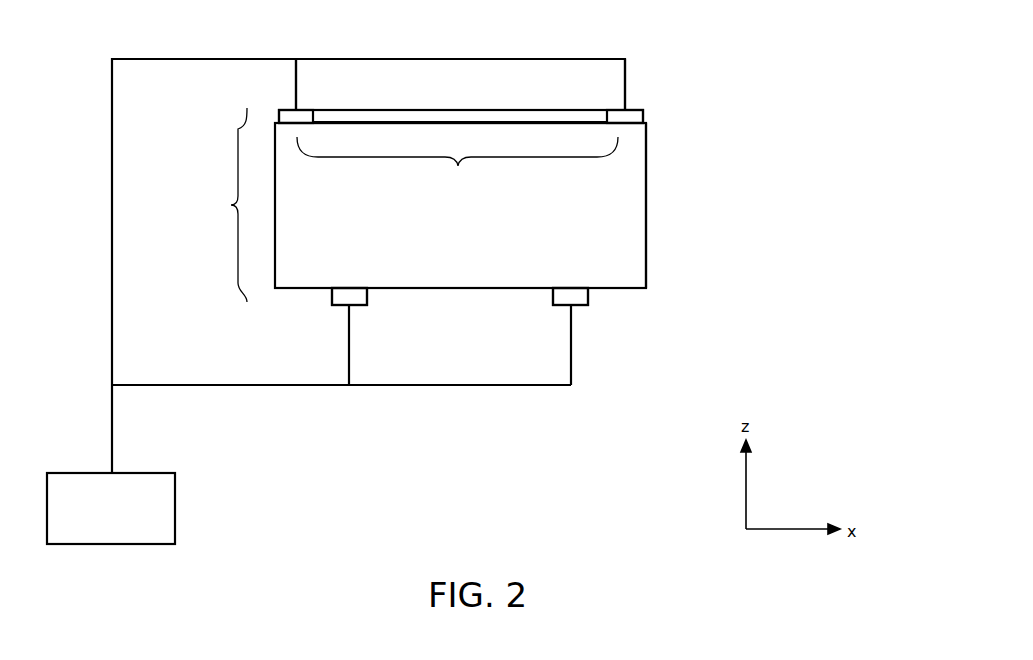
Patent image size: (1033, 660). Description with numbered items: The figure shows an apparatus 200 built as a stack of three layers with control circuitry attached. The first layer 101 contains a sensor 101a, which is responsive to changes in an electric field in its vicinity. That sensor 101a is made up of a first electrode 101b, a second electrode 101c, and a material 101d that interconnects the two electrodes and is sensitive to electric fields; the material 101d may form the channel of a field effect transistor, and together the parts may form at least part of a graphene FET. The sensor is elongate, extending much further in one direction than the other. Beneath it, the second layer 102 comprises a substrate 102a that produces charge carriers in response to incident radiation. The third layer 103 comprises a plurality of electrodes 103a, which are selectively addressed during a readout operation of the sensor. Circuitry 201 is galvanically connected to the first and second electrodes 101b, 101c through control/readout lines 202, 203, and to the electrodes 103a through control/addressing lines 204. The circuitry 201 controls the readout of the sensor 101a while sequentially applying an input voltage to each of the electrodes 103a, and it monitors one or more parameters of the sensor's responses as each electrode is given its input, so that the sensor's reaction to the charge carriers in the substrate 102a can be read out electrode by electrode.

The apparatus 200 is at (822, 49).
The circuitry 201 is at (163, 500).
The control/readout line 202 is at (296, 88).
The control/readout line 203 is at (625, 82).
The control/addressing lines 204 is at (571, 355).
The first layer 101 is at (243, 118).
The sensor 101a is at (458, 167).
The first electrode 101b is at (300, 117).
The second electrode 101c is at (633, 116).
The material 101d is at (556, 108).
The second layer 102 is at (236, 205).
The substrate 102a is at (615, 206).
The third layer 103 is at (243, 295).
The electrodes 103a is at (362, 300).